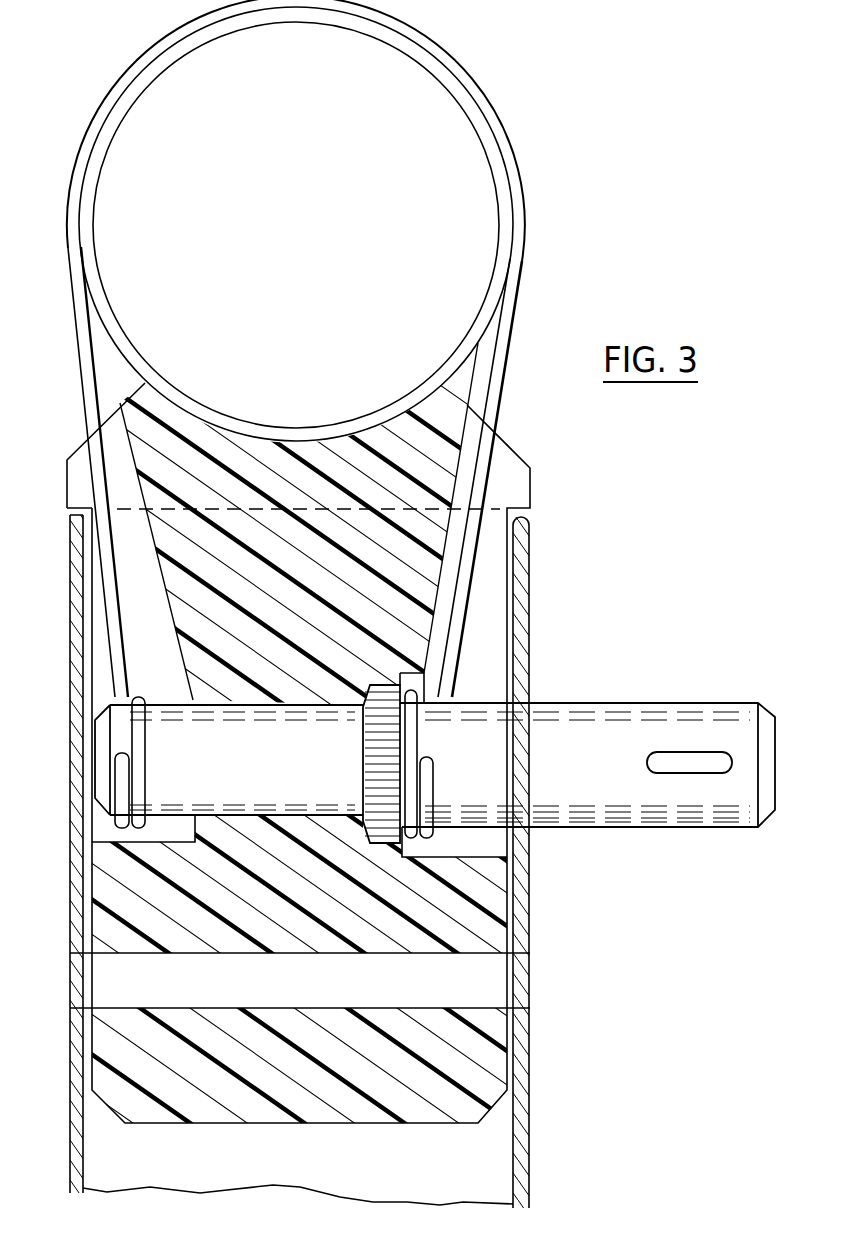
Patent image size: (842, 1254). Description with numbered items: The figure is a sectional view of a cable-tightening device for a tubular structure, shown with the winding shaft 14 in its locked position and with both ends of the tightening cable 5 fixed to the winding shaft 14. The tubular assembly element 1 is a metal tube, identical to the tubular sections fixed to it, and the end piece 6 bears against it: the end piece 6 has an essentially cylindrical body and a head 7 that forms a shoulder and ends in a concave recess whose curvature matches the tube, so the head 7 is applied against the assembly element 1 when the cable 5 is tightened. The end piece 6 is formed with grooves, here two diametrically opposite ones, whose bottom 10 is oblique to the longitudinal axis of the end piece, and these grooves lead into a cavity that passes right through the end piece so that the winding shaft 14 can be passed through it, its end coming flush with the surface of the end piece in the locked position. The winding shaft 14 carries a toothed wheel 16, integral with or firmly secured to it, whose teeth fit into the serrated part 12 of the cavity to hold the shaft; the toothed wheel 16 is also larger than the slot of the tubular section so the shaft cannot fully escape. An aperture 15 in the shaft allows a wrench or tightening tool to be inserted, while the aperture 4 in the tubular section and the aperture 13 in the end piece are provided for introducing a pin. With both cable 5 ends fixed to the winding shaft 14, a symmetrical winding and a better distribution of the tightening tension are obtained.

The assembly element 1 is at (502, 200).
The aperture 4 is at (78, 1005).
The tightening cable 5 is at (488, 402).
The end piece 6 is at (242, 589).
The head 7 is at (183, 467).
The groove bottom 10 is at (445, 597).
The serrated part of cavity 12 is at (392, 680).
The aperture 13 is at (408, 957).
The winding shaft 14 is at (568, 723).
The aperture 15 is at (662, 770).
The toothed wheel 16 is at (382, 749).